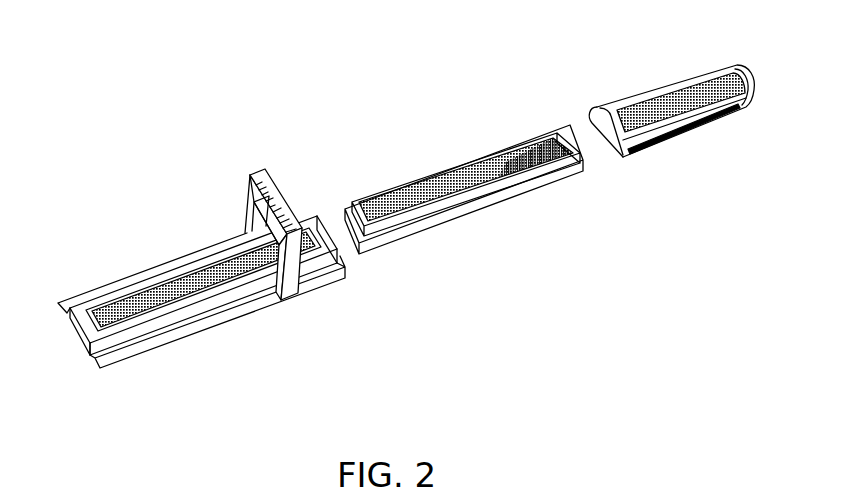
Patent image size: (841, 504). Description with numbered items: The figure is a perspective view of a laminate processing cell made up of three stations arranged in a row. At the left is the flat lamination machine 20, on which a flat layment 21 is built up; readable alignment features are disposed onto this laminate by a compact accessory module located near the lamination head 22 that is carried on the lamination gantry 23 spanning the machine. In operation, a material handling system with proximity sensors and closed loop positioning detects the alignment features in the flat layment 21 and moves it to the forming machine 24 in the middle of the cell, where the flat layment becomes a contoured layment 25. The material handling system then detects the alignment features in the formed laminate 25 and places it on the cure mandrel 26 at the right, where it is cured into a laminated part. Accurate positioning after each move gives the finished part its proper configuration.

The flat lamination machine 20 is at (275, 320).
The flat layment 21 is at (143, 292).
The lamination head 22 is at (262, 223).
The lamination gantry 23 is at (262, 168).
The forming machine 24 is at (482, 214).
The contoured layment 25 is at (448, 183).
The cure mandrel 26 is at (663, 149).